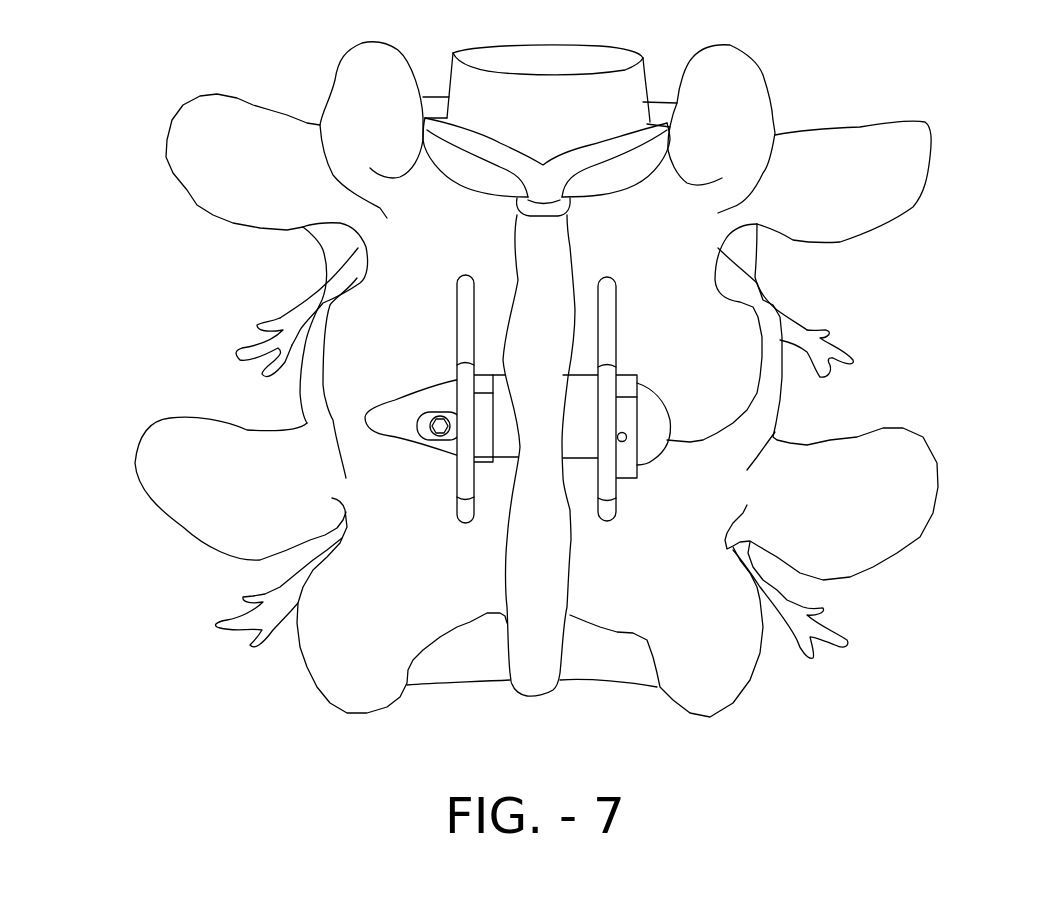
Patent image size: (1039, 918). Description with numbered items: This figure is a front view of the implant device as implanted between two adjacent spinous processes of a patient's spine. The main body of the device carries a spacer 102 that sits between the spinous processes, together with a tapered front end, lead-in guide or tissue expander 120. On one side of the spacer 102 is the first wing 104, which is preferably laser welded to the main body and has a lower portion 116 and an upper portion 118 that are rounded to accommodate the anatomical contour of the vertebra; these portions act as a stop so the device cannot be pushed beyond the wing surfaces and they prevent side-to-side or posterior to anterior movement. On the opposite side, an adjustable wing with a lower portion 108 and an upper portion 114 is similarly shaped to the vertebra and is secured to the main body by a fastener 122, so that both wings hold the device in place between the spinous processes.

The spacer 102 is at (577, 442).
The first wing 104 is at (630, 419).
The lower portion of the adjustable wing 108 is at (457, 518).
The upper portion of the adjustable wing 114 is at (457, 302).
The lower portion of the first wing 116 is at (607, 512).
The upper portion of the first wing 118 is at (613, 312).
The tissue expander 120 is at (397, 402).
The fastener 122 is at (437, 430).